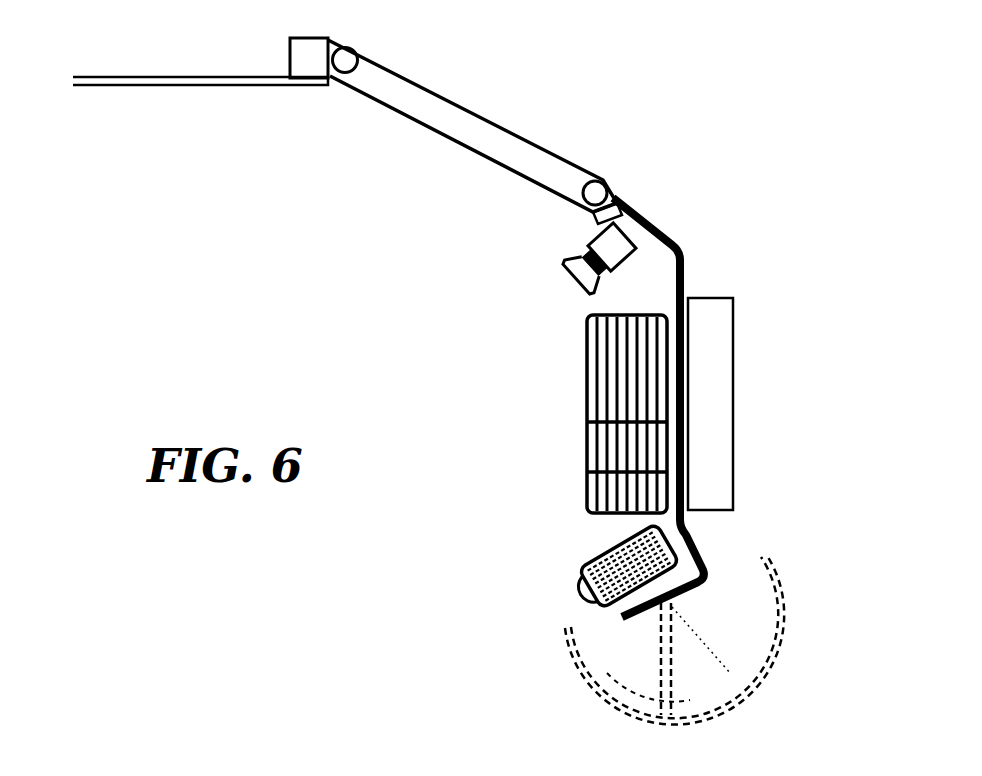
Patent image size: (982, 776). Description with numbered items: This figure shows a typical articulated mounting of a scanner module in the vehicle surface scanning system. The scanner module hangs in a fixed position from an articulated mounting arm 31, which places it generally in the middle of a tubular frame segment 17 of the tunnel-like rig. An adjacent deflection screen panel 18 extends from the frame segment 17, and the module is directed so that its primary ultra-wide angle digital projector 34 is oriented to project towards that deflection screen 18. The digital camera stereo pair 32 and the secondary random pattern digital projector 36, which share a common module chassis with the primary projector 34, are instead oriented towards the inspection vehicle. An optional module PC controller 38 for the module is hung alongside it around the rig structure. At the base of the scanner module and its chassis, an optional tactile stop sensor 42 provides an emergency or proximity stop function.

The tubular frame segment 17 is at (328, 40).
The deflection screen panel 18 is at (160, 85).
The articulated mounting arm 31 is at (497, 115).
The digital camera stereo pair 32 is at (588, 240).
The primary ultra-wide angle digital projector 34 is at (585, 404).
The secondary random pattern digital projector 36 is at (580, 567).
The module PC controller 38 is at (737, 345).
The tactile stop sensor 42 is at (577, 678).